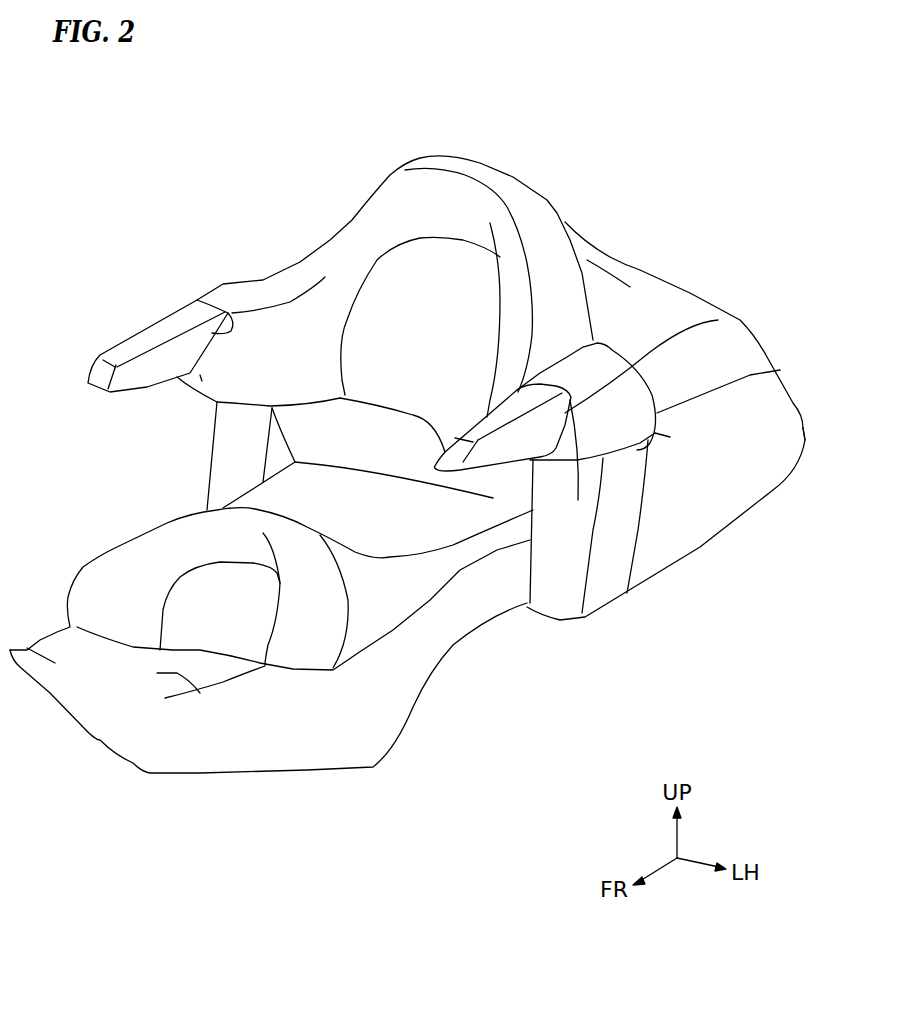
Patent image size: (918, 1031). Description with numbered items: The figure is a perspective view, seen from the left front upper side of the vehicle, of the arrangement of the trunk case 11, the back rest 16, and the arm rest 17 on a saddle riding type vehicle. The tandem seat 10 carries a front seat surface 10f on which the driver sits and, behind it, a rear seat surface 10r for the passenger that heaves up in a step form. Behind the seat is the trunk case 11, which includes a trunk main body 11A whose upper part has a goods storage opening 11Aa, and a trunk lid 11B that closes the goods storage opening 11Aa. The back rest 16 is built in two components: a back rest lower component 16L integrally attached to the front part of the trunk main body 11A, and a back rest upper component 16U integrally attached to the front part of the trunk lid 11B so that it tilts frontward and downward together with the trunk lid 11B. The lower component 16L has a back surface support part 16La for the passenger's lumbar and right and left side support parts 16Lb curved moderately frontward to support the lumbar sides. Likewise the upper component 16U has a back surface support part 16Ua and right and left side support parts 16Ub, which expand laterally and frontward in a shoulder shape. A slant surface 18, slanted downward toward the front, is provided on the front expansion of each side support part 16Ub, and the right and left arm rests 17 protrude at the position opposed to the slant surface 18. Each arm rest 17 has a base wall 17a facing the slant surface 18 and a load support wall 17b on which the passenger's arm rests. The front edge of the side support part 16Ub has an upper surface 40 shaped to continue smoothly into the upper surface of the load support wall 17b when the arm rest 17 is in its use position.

The tandem seat 10 is at (50, 627).
The front seat surface 10f is at (200, 693).
The rear seat surface 10r is at (340, 521).
The trunk case 11 is at (741, 319).
The trunk main body 11A is at (753, 478).
The goods storage opening 11Aa is at (750, 375).
The trunk lid 11B is at (647, 293).
The back rest 16 is at (424, 155).
The back rest upper component 16U is at (550, 200).
The back surface support part 16Ua is at (390, 295).
The side support part 16Ub is at (245, 281).
The back rest lower component 16L is at (567, 603).
The back surface support part 16La is at (397, 452).
The side support part 16Lb is at (233, 467).
The arm rest 17 is at (155, 318).
The base wall 17a is at (229, 313).
The load support wall 17b is at (125, 348).
The slant surface 18 is at (200, 390).
The upper surface 40 is at (253, 297).